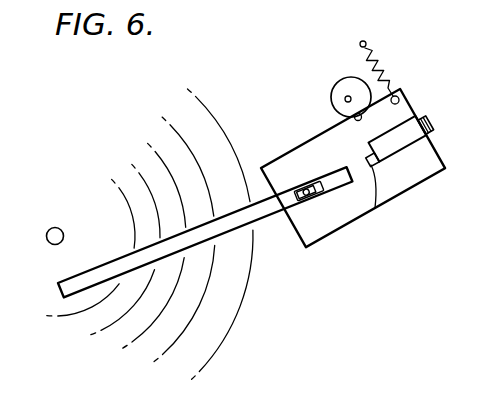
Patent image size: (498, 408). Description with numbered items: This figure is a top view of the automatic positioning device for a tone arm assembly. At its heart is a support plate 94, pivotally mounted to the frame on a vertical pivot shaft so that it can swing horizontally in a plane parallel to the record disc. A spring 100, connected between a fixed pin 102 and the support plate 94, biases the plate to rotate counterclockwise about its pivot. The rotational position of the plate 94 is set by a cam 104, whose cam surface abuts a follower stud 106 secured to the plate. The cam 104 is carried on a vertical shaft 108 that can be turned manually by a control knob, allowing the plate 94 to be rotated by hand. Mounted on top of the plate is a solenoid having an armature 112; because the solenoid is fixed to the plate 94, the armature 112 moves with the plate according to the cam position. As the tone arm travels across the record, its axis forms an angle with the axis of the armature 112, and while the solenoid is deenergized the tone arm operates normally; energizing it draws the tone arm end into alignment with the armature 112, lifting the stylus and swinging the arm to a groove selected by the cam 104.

The support plate 94 is at (413, 177).
The spring 100 is at (377, 64).
The fixed pin 102 is at (365, 41).
The cam 104 is at (344, 77).
The follower stud 106 is at (356, 120).
The vertical shaft 108 is at (345, 99).
The armature 112 is at (375, 208).